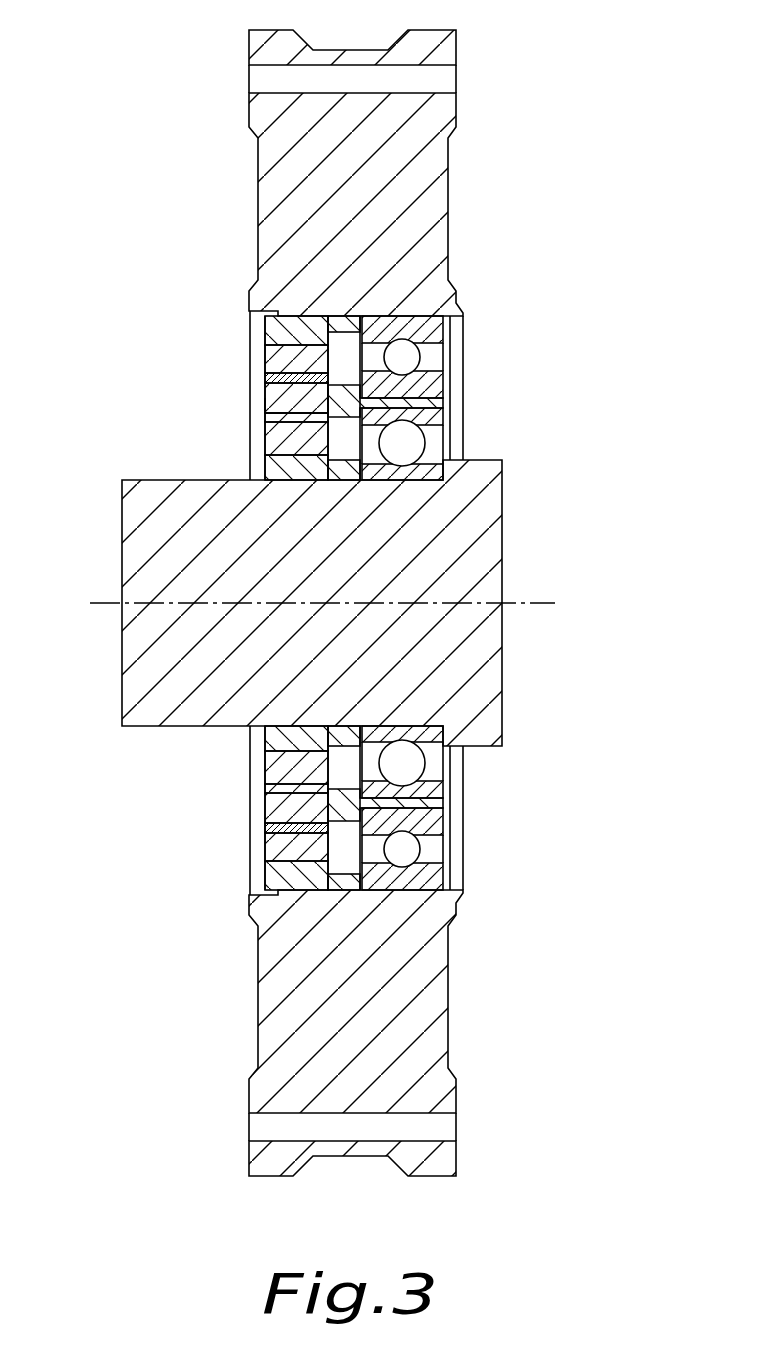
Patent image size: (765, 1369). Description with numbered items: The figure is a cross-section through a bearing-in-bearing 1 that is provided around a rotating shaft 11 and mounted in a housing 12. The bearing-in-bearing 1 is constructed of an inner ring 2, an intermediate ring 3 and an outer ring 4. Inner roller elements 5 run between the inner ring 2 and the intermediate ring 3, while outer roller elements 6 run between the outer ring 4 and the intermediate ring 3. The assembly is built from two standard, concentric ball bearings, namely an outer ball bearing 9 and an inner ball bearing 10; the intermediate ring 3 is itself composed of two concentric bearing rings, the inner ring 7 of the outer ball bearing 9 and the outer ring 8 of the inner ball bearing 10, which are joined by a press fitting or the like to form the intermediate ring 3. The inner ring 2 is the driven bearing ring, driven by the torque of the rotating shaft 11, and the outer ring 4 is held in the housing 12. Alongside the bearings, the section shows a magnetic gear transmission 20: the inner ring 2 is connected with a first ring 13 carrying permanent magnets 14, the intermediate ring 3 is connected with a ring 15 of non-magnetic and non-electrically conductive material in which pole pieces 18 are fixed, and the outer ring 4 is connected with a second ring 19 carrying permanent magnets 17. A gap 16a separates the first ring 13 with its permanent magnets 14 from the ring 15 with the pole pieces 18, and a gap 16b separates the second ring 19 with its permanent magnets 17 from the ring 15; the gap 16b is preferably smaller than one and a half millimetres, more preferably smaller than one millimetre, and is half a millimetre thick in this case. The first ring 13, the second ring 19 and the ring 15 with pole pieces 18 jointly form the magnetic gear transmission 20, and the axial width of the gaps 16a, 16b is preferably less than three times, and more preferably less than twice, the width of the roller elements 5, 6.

The bearing-in-bearing 1 is at (551, 50).
The inner ring 2 is at (425, 468).
The intermediate ring 3 is at (427, 400).
The outer ring 4 is at (423, 322).
The inner roller elements 5 is at (408, 440).
The outer roller elements 6 is at (410, 357).
The inner ring of the outer ball bearing 7 is at (422, 380).
The outer ring of the inner ball bearing 8 is at (427, 422).
The outer ball bearing 9 is at (585, 288).
The inner ball bearing 10 is at (590, 400).
The rotating shaft 11 is at (452, 556).
The housing 12 is at (280, 165).
The first ring 13 is at (272, 467).
The permanent magnets 14 is at (272, 447).
The ring containing pole pieces 15 is at (272, 402).
The gap 16a is at (272, 418).
The gap 16b is at (270, 377).
The permanent magnets 17 is at (278, 358).
The pole pieces 18 is at (272, 393).
The second ring 19 is at (280, 333).
The magnetic gear transmission 20 is at (118, 273).